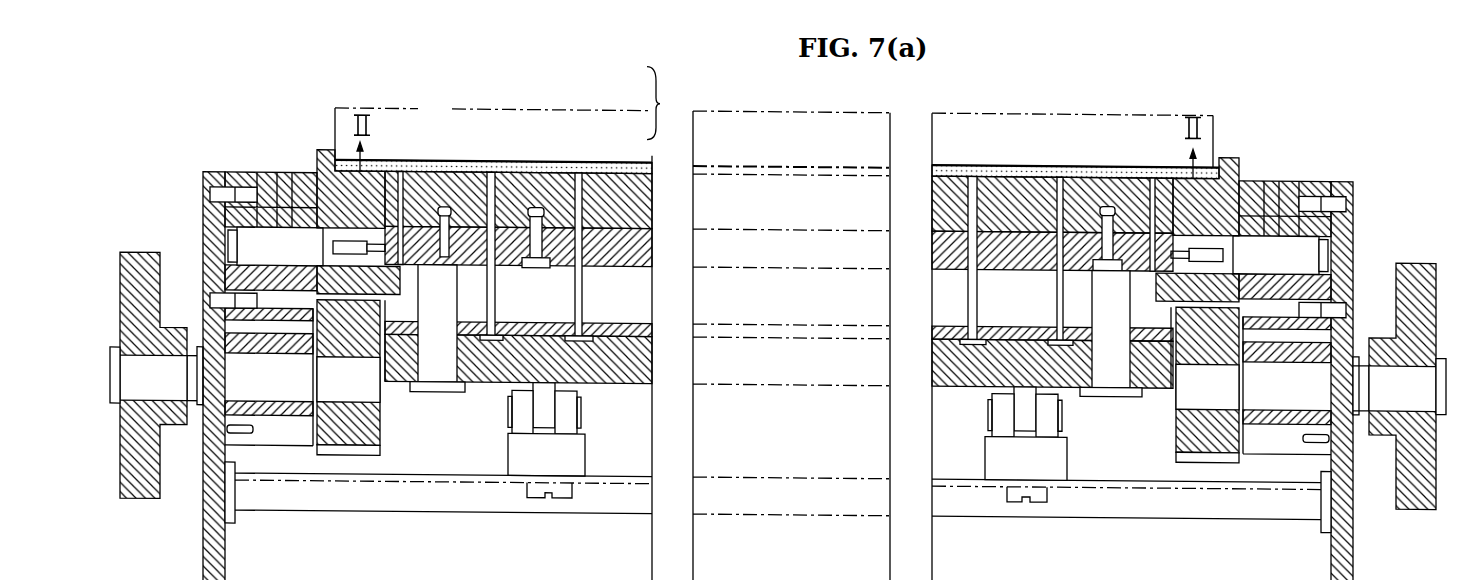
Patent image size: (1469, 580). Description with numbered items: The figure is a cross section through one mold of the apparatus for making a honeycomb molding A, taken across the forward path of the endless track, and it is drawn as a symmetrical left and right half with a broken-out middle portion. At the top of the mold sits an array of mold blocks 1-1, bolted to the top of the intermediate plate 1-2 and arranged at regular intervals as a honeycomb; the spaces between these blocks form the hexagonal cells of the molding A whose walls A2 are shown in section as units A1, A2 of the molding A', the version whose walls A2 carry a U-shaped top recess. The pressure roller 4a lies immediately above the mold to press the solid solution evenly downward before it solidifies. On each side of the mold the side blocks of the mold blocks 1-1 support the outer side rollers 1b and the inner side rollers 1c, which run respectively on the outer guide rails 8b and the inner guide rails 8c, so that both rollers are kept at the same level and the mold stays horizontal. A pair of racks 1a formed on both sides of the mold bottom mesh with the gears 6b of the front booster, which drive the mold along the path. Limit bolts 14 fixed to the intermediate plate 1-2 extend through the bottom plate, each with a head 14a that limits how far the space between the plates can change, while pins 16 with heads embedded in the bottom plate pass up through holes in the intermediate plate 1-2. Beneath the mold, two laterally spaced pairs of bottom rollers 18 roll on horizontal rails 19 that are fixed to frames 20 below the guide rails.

The mold blocks 1-1 is at (335, 157).
The intermediate plate 1-2 is at (498, 238).
The racks 1a is at (388, 265).
The outer side rollers 1b is at (225, 214).
The inner side rollers 1c is at (287, 215).
The outer guide rails 8b is at (268, 172).
The inner guide rails 8c is at (308, 298).
The first unit A1 is at (566, 165).
The walls A2 is at (587, 200).
The honeycomb molding A' is at (666, 103).
The molding A is at (778, 526).
The pressure roller 4a is at (1096, 103).
The gears 6b is at (342, 452).
The limit bolts 14 is at (1112, 340).
The bolt head 14a is at (1107, 388).
The pins 16 is at (737, 577).
The bottom rollers 18 is at (570, 408).
The horizontal rails 19 is at (517, 450).
The frames 20 is at (602, 479).